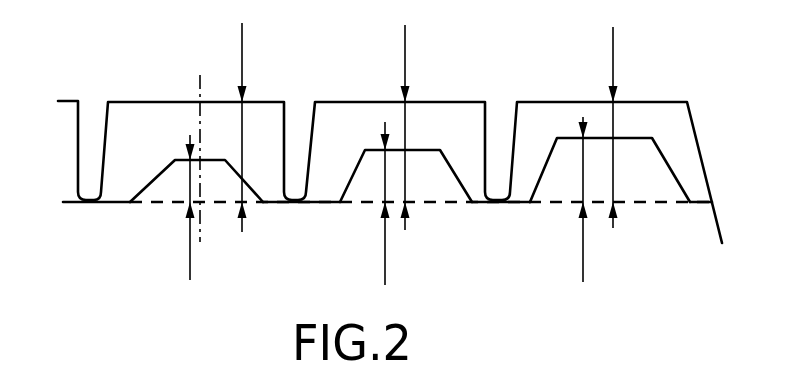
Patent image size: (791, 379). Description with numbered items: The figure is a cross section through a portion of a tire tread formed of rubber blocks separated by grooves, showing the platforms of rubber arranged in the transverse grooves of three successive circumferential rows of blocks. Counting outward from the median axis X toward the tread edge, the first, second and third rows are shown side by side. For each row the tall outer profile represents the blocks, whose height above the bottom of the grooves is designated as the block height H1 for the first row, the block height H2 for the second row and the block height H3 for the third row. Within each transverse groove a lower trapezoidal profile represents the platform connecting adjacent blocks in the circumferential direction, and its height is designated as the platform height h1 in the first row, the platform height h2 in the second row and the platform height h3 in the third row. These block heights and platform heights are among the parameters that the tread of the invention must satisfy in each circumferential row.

The median axis X is at (202, 157).
The height of the blocks of row one H1 is at (258, 127).
The height of the platforms of row one h1 is at (171, 215).
The height of the blocks of row two H2 is at (425, 127).
The height of the platforms of row two h2 is at (366, 209).
The height of the blocks of row three H3 is at (631, 127).
The height of the platforms of row three h3 is at (564, 207).